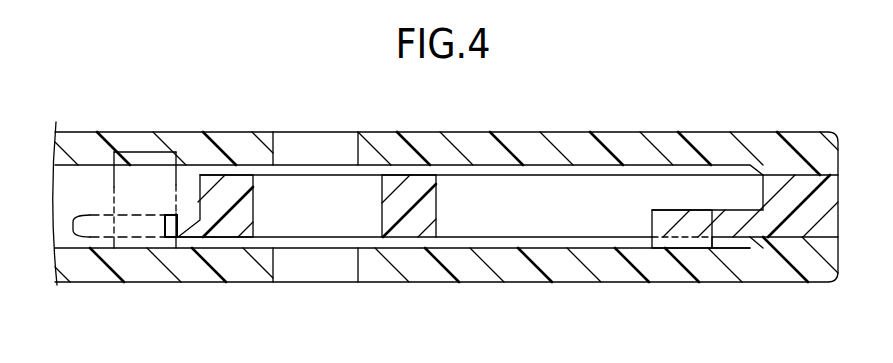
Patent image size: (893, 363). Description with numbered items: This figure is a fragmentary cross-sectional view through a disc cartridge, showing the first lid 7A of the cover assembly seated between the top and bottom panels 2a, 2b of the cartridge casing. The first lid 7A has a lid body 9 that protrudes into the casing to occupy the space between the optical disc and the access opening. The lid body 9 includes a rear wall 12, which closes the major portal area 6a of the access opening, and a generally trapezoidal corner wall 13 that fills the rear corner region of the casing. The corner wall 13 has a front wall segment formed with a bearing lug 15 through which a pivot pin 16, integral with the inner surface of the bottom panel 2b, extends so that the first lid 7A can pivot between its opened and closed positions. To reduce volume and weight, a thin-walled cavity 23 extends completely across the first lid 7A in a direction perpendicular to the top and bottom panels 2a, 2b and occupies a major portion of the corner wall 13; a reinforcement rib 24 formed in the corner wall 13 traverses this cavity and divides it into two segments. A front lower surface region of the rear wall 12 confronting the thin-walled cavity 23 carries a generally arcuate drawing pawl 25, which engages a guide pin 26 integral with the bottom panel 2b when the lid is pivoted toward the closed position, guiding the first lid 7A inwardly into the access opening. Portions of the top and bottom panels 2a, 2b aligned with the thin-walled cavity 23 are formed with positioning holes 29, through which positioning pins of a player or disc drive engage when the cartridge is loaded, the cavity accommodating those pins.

The top panel 2a is at (572, 143).
The bottom panel 2b is at (576, 270).
The major portal area 6a is at (795, 232).
The first lid 7A is at (631, 154).
The lid body 9 is at (402, 182).
The rear wall 12 is at (806, 188).
The corner wall 13 is at (233, 190).
The bearing lug 15 is at (166, 230).
The pivot pin 16 is at (147, 150).
The thin-walled cavity 23 is at (353, 218).
The reinforcement rib 24 is at (433, 201).
The drawing pawl 25 is at (664, 210).
The guide pin 26 is at (694, 232).
The positioning holes 29 is at (297, 148).